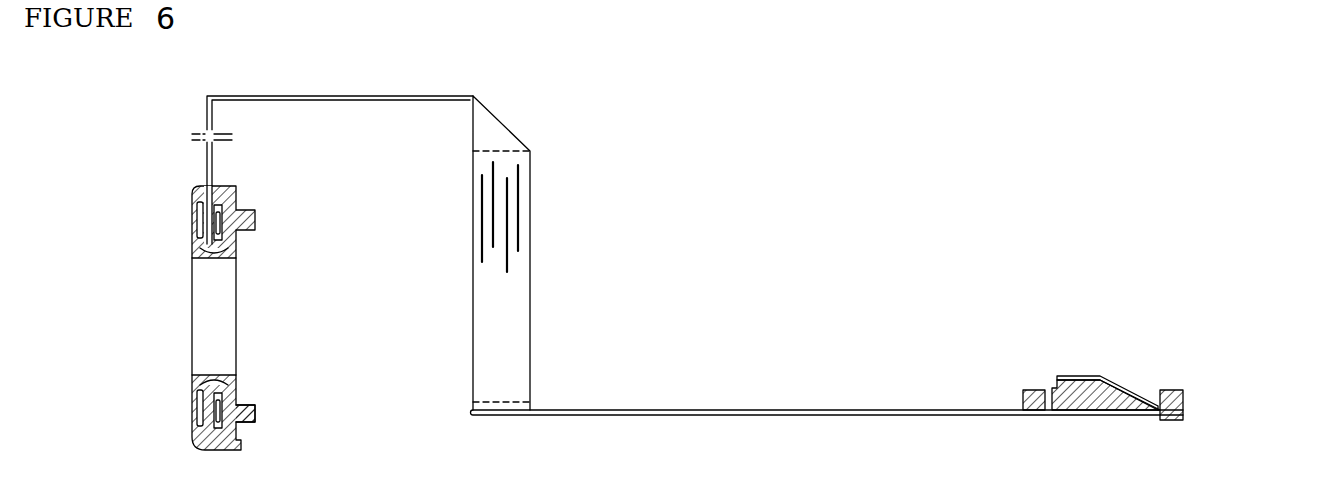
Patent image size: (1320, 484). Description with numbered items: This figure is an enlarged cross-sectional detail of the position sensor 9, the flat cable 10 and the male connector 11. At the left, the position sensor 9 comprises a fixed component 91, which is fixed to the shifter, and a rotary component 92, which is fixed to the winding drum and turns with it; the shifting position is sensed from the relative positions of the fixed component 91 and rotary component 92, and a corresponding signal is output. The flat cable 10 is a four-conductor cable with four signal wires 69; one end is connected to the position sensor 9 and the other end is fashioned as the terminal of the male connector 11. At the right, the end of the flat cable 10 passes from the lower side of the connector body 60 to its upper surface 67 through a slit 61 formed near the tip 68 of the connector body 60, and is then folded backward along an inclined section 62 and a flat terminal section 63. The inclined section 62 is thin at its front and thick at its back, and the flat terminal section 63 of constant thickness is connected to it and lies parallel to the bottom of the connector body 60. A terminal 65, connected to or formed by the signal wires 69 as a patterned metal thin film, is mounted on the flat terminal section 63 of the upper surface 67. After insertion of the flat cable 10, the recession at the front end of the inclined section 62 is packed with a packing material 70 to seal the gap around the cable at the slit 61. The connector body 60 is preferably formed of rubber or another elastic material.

The position sensor 9 is at (181, 226).
The flat cable 10 is at (752, 410).
The male connector 11 is at (1050, 353).
The connector body 60 is at (1020, 392).
The slit 61 is at (1183, 410).
The inclined section 62 is at (1114, 394).
The flat terminal section 63 is at (1080, 378).
The terminal 65 is at (1068, 377).
The upper surface 67 is at (1172, 248).
The tip 68 is at (1175, 392).
The signal wires 69 is at (493, 168).
The packing material 70 is at (1157, 388).
The fixed component 91 is at (196, 387).
The rotary component 92 is at (256, 410).